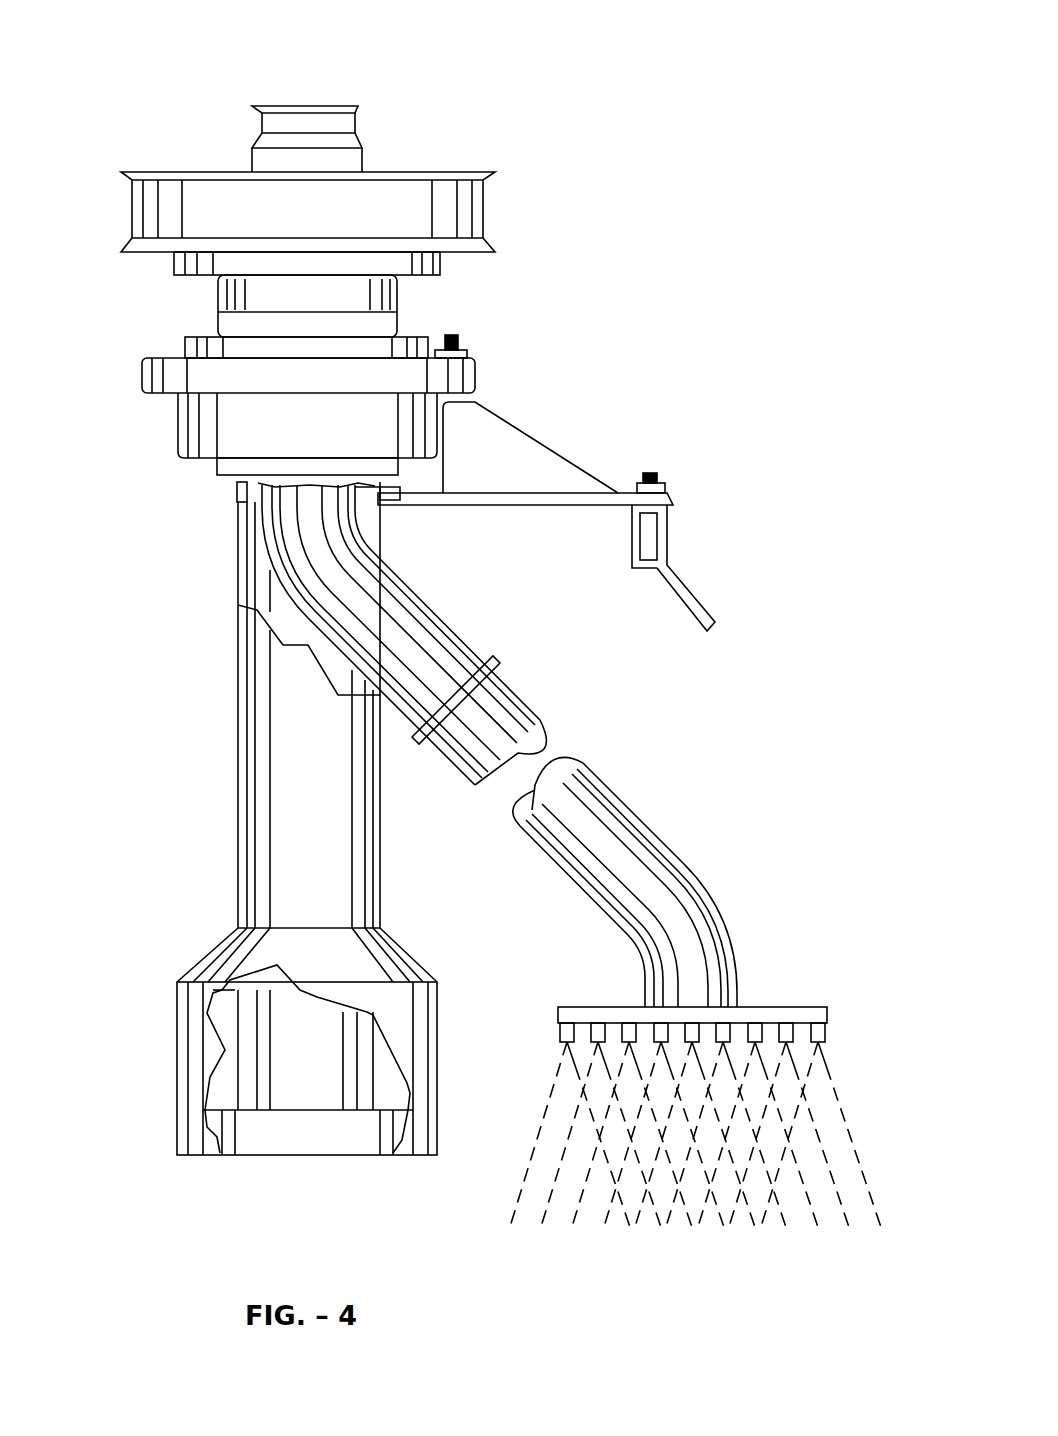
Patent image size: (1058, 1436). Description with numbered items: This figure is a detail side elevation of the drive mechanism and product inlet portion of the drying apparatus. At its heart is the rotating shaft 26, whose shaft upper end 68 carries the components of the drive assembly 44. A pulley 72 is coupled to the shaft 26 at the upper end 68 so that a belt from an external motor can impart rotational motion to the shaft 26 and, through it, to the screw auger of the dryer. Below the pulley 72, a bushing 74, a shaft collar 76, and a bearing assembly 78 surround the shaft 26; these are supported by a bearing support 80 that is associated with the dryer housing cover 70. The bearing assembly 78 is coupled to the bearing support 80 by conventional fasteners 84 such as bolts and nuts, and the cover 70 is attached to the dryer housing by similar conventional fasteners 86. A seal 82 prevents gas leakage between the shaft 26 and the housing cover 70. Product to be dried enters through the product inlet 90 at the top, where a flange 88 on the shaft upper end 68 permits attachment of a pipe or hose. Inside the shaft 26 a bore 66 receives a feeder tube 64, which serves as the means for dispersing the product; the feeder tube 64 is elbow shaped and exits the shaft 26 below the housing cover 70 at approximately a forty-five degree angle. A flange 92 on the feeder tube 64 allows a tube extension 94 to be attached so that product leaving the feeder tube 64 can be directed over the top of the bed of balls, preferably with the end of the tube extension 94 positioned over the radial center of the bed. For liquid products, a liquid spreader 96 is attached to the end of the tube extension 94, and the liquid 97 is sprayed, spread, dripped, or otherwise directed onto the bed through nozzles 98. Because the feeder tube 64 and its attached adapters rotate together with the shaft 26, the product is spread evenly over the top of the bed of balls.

The shaft 26 is at (235, 845).
The drive assembly 44 is at (418, 315).
The feeder tube 64 is at (433, 613).
The bore 66 is at (343, 635).
The shaft upper end 68 is at (323, 266).
The dryer housing cover 70 is at (532, 492).
The pulley 72 is at (490, 210).
The bushing 74 is at (442, 265).
The shaft collar 76 is at (402, 297).
The bearing assembly 78 is at (140, 373).
The bearing support 80 is at (540, 445).
The seal 82 is at (252, 493).
The fasteners 84 is at (485, 348).
The fasteners 86 is at (680, 477).
The flange 88 is at (357, 108).
The product inlet 90 is at (340, 86).
The flange 92 is at (493, 655).
The tube extension 94 is at (722, 933).
The liquid spreader 96 is at (743, 1005).
The liquid 97 is at (847, 1137).
The nozzles 98 is at (827, 1040).